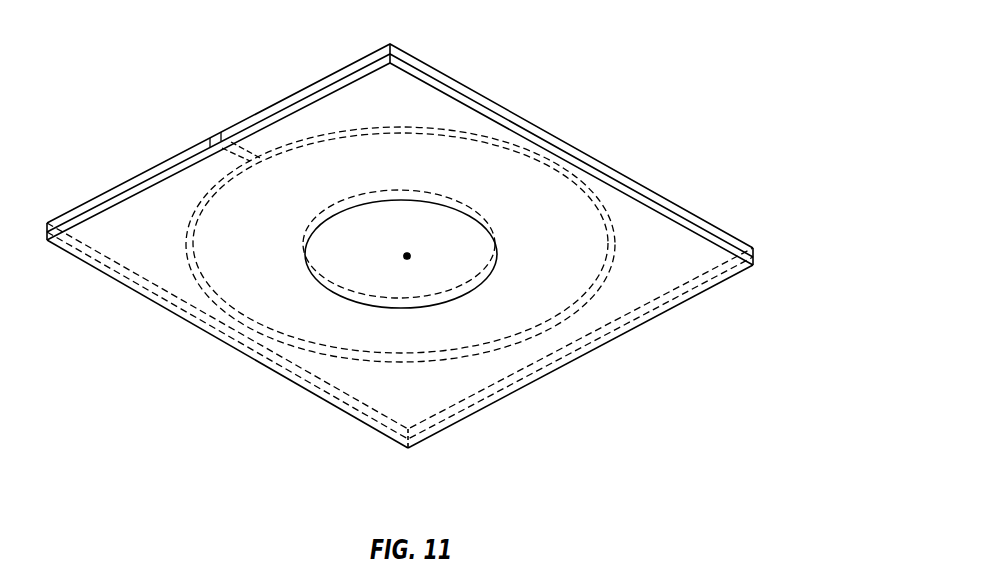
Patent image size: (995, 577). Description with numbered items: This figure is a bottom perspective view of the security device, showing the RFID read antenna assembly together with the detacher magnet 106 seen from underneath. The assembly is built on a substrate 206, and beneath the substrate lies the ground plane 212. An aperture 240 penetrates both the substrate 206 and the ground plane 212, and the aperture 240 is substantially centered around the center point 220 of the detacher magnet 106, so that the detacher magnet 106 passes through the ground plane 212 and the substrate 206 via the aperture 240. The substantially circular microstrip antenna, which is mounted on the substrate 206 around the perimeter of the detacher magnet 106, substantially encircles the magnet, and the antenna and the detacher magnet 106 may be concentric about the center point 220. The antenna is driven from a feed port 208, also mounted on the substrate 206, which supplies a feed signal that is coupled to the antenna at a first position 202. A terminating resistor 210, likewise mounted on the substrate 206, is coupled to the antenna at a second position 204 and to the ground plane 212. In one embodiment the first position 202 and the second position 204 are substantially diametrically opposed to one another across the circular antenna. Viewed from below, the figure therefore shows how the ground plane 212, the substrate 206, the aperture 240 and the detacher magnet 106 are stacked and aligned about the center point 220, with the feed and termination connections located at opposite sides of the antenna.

The detacher magnet 106 is at (473, 247).
The first position 202 is at (558, 334).
The second position 204 is at (246, 170).
The substrate 206 is at (455, 83).
The feed port 208 is at (575, 345).
The terminating resistor 210 is at (210, 142).
The ground plane 212 is at (425, 403).
The center point 220 is at (407, 256).
The aperture 240 is at (497, 258).